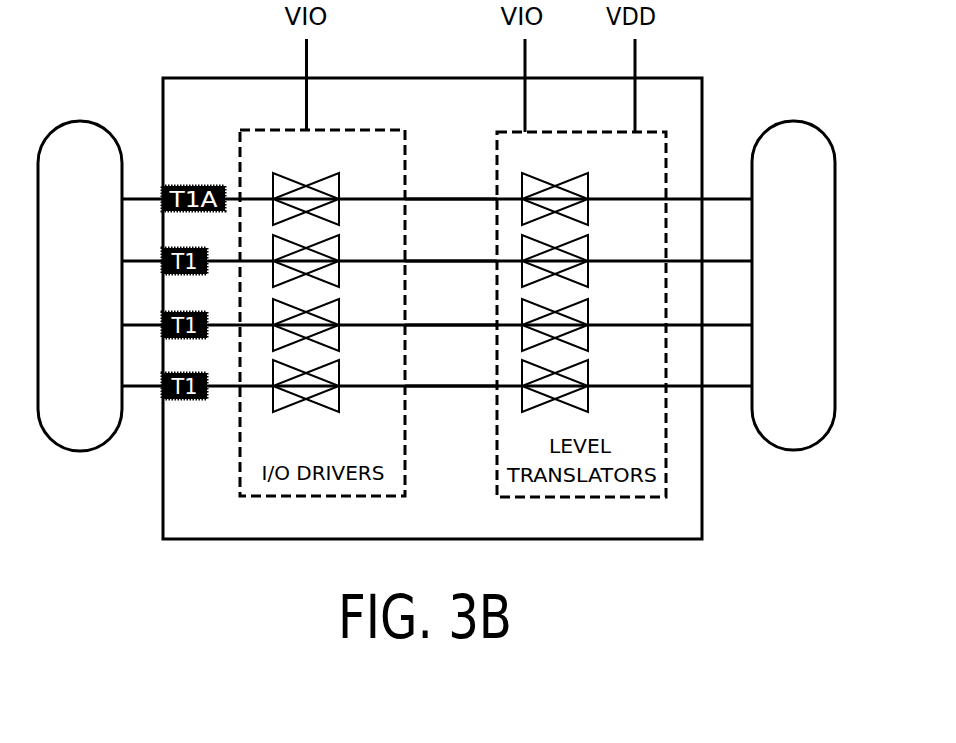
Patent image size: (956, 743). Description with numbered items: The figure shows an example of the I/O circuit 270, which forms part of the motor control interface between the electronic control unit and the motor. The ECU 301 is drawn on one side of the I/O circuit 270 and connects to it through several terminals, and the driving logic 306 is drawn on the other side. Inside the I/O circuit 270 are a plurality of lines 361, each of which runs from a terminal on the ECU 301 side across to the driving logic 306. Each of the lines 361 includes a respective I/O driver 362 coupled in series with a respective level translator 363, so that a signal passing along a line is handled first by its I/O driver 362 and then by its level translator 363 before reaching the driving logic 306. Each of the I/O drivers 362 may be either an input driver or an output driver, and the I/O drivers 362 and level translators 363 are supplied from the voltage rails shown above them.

The I/O circuit 270 is at (192, 61).
The electronic control unit 301 is at (91, 243).
The driving logic 306 is at (803, 187).
The lines 361 is at (424, 197).
The I/O driver 362 is at (324, 176).
The level translator 363 is at (574, 176).